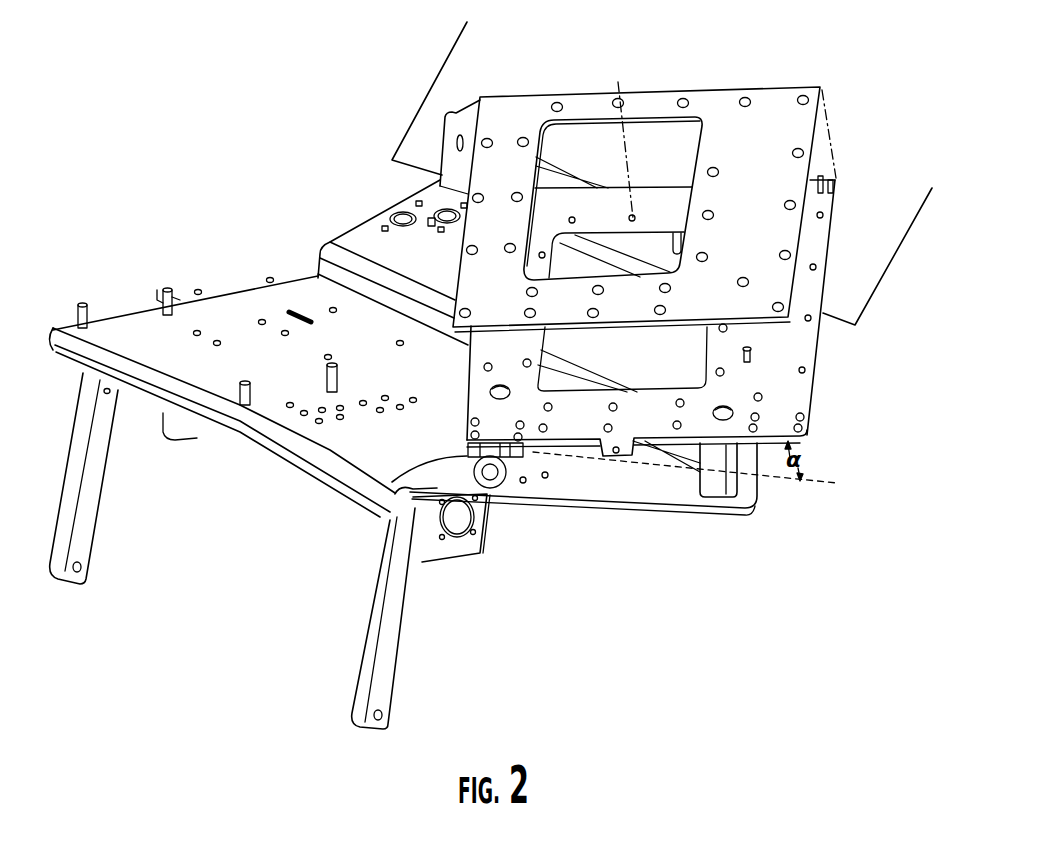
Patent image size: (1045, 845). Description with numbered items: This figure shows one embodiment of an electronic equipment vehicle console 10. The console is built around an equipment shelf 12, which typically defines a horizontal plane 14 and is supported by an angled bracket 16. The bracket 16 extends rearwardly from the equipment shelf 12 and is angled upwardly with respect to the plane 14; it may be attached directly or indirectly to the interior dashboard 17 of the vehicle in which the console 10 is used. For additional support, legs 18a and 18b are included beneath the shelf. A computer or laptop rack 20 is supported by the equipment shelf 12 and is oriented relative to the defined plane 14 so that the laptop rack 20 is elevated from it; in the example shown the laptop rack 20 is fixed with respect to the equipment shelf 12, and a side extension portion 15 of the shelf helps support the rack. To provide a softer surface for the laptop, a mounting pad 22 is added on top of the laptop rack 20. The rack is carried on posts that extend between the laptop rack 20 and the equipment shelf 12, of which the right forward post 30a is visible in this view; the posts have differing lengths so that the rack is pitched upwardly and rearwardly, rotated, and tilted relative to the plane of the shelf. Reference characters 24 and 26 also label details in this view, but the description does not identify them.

The electronic equipment vehicle console 10 is at (332, 90).
The equipment shelf 12 is at (220, 300).
The horizontal plane 14 is at (753, 517).
The side extension portion 15 is at (660, 490).
The angled bracket 16 is at (368, 233).
The interior dashboard 17 is at (433, 98).
The leg 18a is at (95, 493).
The leg 18b is at (395, 638).
The laptop rack 20 is at (807, 350).
The mounting pad 22 is at (636, 174).
The pivot hinge knob 24 is at (470, 466).
The aperture 26 is at (663, 188).
The right forward post 30a is at (718, 485).